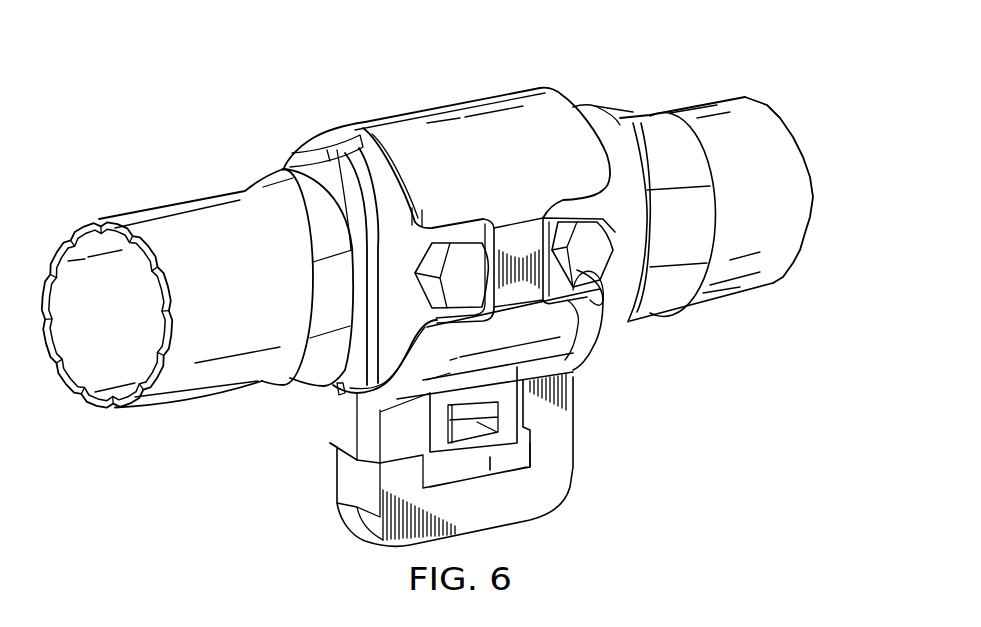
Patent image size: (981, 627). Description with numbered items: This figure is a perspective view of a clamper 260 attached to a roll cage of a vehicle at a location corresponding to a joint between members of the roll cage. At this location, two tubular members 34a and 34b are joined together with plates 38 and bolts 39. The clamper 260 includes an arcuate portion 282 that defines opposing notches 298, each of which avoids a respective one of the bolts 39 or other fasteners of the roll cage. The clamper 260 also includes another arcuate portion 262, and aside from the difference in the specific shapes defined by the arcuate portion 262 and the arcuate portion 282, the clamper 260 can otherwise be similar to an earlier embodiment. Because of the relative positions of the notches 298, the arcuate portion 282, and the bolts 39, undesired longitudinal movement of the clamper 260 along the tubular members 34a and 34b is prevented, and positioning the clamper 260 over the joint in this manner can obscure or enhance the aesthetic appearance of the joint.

The tubular member 34a is at (163, 201).
The tubular member 34b is at (716, 94).
The plates 38 is at (300, 153).
The bolts 39 is at (466, 258).
The clamper 260 is at (445, 85).
The arcuate portion 262 is at (333, 396).
The arcuate portion 282 is at (590, 359).
The notches 298 is at (437, 320).